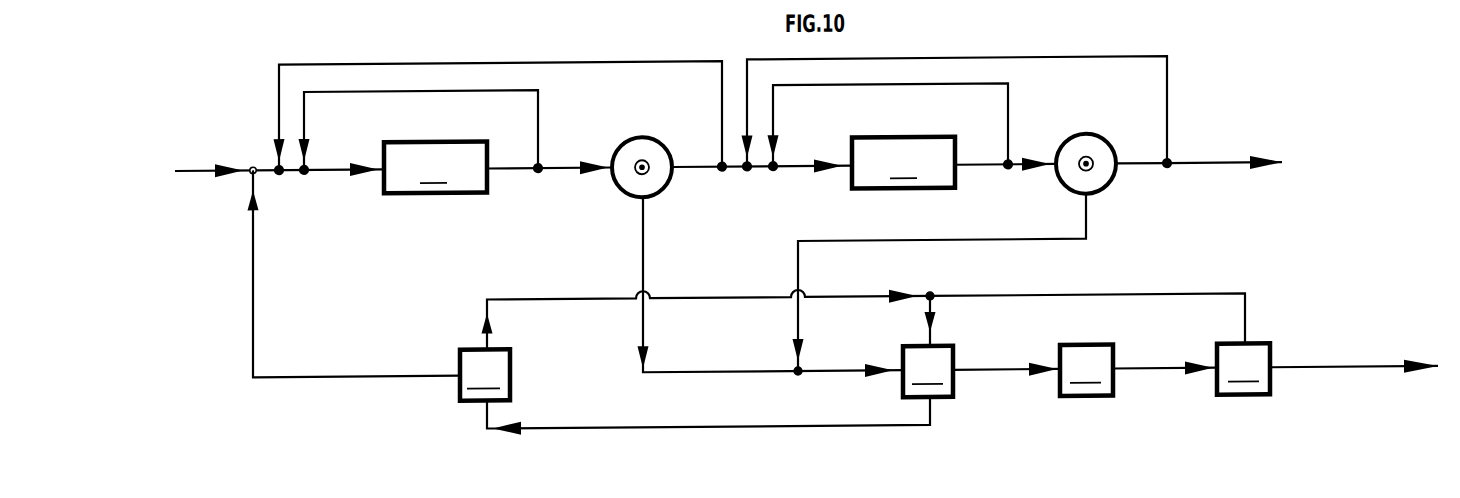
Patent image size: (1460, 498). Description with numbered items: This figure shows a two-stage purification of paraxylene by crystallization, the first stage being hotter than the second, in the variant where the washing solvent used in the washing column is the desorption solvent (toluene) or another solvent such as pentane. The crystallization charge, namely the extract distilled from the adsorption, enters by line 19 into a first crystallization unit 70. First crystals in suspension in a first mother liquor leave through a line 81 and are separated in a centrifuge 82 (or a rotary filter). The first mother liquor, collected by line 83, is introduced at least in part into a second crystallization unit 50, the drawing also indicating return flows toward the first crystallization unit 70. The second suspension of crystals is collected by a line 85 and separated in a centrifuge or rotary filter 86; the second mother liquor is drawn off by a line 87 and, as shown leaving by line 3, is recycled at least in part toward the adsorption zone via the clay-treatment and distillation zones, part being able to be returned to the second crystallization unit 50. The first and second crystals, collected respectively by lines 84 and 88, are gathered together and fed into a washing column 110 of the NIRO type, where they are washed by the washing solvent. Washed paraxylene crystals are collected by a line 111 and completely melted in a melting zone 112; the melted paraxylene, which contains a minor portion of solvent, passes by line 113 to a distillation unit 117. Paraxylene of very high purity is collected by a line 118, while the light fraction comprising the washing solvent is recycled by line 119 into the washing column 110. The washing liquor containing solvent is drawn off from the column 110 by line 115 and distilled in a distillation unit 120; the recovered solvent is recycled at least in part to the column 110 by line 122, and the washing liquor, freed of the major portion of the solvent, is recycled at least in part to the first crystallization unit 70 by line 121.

The line 19 is at (187, 171).
The first crystallization unit 70 is at (435, 168).
The line 81 is at (517, 173).
The centrifuge 82 is at (634, 141).
The line 83 is at (731, 175).
The second crystallization unit 50 is at (903, 163).
The line 85 is at (972, 173).
The centrifuge or rotary filter 86 is at (1086, 141).
The line 87 is at (1150, 173).
The output signal 3 is at (1200, 171).
The line 84 is at (643, 237).
The line 88 is at (1086, 244).
The line 121 is at (253, 243).
The distillation unit 120 is at (485, 374).
The control block output line 122 is at (545, 304).
The control line to block 117 119 is at (1092, 302).
The feedback line from block 110 115 is at (556, 431).
The washing column 110 is at (928, 371).
The line 111 is at (984, 380).
The melting zone 112 is at (1086, 369).
The connection line 112-117 113 is at (1133, 382).
The distillation unit 117 is at (1243, 368).
The line 118 is at (1300, 376).